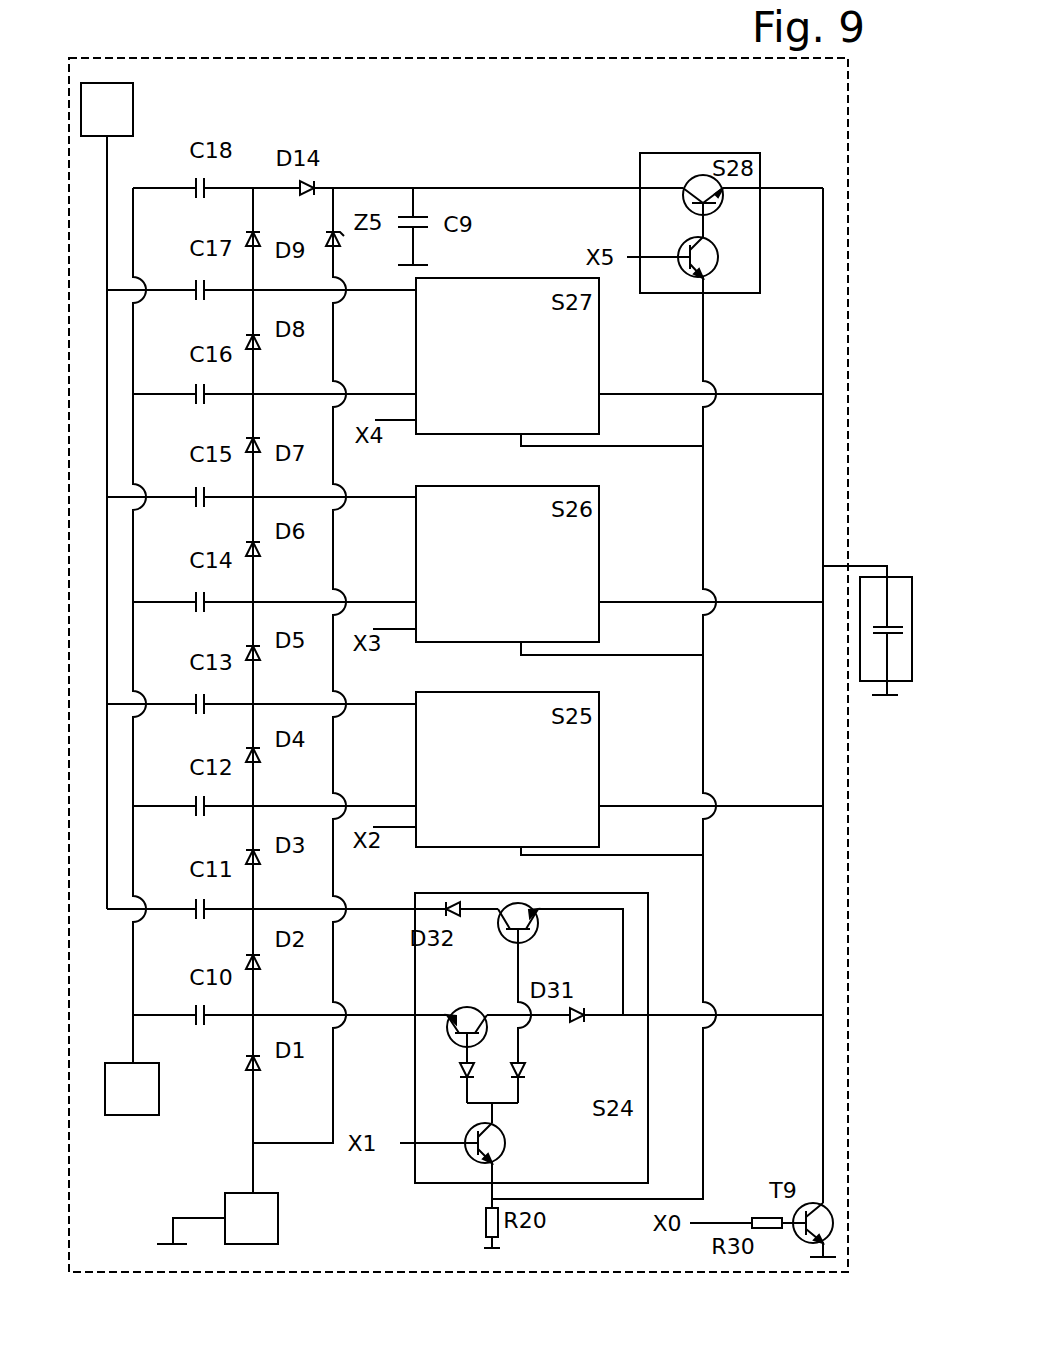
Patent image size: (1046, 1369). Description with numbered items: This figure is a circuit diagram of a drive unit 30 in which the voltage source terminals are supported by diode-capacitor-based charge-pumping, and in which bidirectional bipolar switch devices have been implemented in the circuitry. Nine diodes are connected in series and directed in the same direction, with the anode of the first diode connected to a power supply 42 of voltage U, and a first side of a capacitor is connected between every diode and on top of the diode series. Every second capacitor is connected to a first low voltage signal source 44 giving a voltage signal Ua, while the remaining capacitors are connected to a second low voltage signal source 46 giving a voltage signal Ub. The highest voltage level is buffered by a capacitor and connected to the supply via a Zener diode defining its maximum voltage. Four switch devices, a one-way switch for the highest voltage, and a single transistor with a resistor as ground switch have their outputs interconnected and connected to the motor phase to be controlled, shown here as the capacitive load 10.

The drive unit 30 is at (598, 70).
The second low voltage signal source 46 is at (133, 104).
The first low voltage signal source 44 is at (159, 1095).
The power supply 42 is at (278, 1240).
The capacitor 10 is at (903, 670).